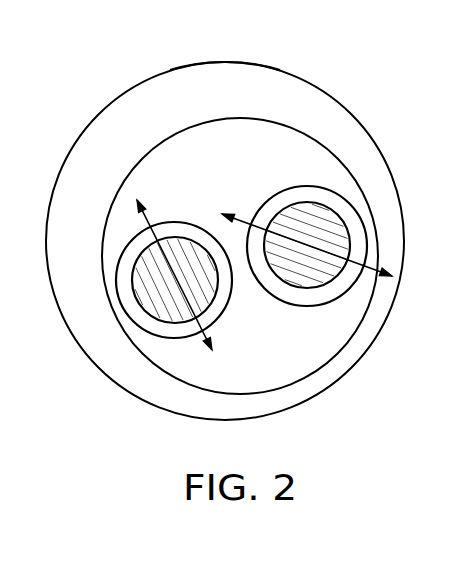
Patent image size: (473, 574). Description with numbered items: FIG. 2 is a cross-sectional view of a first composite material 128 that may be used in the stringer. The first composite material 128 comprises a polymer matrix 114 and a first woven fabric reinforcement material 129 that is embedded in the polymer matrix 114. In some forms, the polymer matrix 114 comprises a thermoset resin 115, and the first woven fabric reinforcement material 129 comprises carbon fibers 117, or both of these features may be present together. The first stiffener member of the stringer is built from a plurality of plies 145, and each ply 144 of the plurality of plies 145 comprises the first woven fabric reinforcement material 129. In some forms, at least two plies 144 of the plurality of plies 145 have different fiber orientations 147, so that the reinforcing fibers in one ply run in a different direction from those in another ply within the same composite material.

The polymer matrix 114 is at (211, 75).
The thermoset resin 115 is at (259, 75).
The carbon fibers 117 is at (142, 258).
The first composite material 128 is at (377, 142).
The first woven fabric reinforcement material 129 is at (145, 305).
The ply 144 is at (233, 303).
The plurality of plies 145 is at (363, 327).
The fiber orientations 147 is at (148, 213).